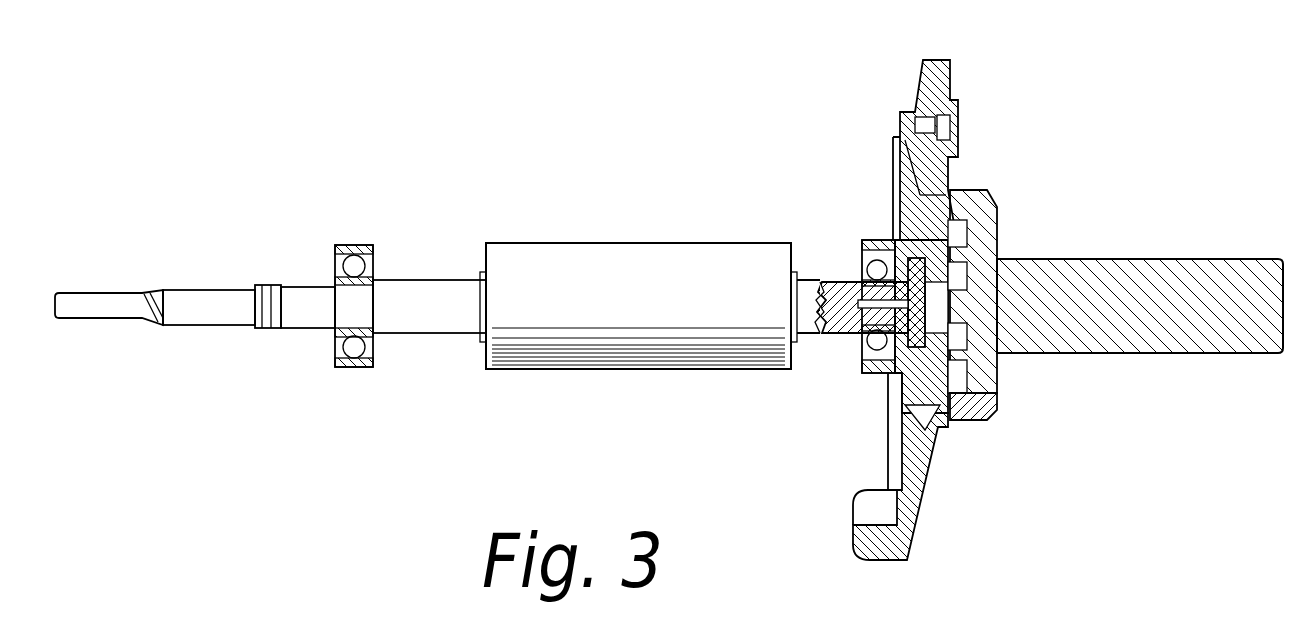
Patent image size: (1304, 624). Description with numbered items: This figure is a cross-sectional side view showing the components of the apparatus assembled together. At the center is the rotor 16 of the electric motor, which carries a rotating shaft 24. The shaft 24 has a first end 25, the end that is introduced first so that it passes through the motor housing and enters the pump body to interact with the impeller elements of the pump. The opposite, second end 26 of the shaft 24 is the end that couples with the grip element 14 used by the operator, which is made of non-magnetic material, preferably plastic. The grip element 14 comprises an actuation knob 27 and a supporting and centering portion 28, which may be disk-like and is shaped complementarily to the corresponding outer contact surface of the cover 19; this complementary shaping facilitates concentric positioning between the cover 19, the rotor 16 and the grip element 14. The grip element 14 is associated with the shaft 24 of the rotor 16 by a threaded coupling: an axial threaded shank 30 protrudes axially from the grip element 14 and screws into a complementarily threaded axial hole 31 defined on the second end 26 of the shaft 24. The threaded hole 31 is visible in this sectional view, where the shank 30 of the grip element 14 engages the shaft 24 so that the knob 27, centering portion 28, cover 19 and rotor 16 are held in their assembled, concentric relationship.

The grip element 14 is at (1039, 290).
The rotor 16 is at (648, 222).
The cover 19 is at (1005, 100).
The rotating shaft 24 is at (443, 303).
The first end 25 is at (128, 292).
The second end 26 is at (843, 320).
The actuation knob 27 is at (1190, 320).
The supporting and centering portion 28 is at (997, 205).
The axial threaded shank 30 is at (990, 412).
The threaded axial hole 31 is at (860, 307).